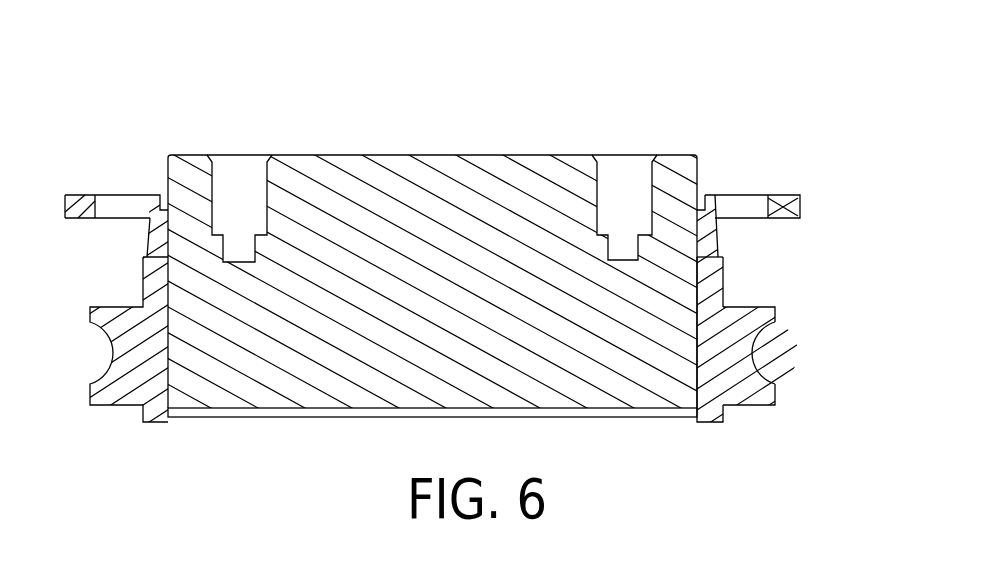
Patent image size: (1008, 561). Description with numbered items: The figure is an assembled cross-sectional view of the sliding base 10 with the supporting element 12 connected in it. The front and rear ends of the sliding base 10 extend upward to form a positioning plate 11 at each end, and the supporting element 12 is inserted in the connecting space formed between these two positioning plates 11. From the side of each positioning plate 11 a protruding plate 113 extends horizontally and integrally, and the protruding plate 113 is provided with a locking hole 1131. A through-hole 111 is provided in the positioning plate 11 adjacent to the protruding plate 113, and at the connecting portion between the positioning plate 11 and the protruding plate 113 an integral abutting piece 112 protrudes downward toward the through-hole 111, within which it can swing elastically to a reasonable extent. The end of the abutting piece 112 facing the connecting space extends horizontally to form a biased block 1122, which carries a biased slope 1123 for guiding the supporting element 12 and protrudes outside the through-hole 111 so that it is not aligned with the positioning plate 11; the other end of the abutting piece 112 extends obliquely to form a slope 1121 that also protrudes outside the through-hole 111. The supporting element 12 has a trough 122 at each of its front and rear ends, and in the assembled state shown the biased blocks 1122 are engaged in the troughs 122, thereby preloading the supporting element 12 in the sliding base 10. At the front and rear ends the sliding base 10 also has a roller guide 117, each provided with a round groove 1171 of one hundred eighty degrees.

The sliding base 10 is at (119, 191).
The positioning plate 11 is at (155, 282).
The supporting element 12 is at (375, 150).
The through-hole 111 is at (723, 257).
The abutting piece 112 is at (700, 196).
The protruding plate 113 is at (800, 208).
The roller guide 117 is at (770, 315).
The trough 122 is at (652, 212).
The slope 1121 is at (718, 240).
The biased block 1122 is at (700, 247).
The biased slope 1123 is at (705, 210).
The locking hole 1131 is at (753, 207).
The round groove 1171 is at (750, 350).